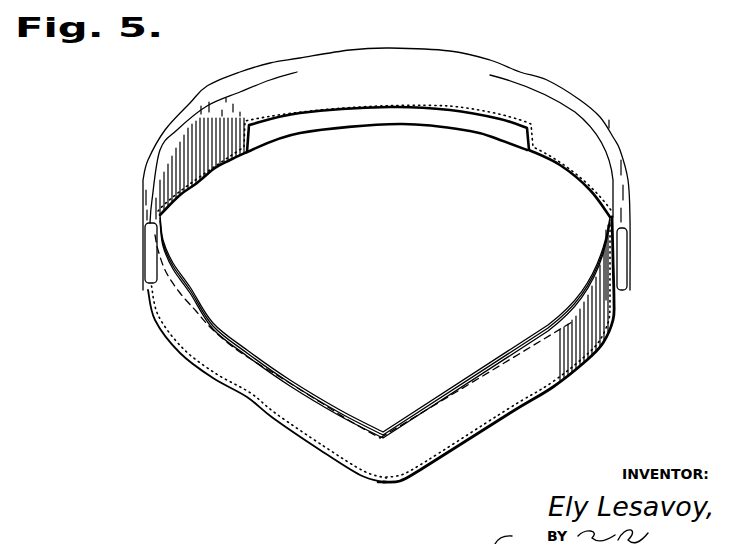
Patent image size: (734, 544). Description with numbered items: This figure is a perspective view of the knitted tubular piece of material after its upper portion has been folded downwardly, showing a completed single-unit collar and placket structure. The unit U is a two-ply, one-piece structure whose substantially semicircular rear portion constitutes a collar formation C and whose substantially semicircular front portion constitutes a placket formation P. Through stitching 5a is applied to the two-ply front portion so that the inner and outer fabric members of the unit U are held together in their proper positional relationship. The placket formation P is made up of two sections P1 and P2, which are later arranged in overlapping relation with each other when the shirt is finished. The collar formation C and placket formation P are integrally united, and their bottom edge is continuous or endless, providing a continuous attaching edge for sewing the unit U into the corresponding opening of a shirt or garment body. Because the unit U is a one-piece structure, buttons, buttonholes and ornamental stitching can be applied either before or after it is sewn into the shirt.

The collar formation C is at (165, 107).
The unit U is at (667, 187).
The through stitching 5a is at (303, 389).
The placket section P1 is at (257, 383).
The placket section P2 is at (520, 380).
The placket formation P is at (450, 490).